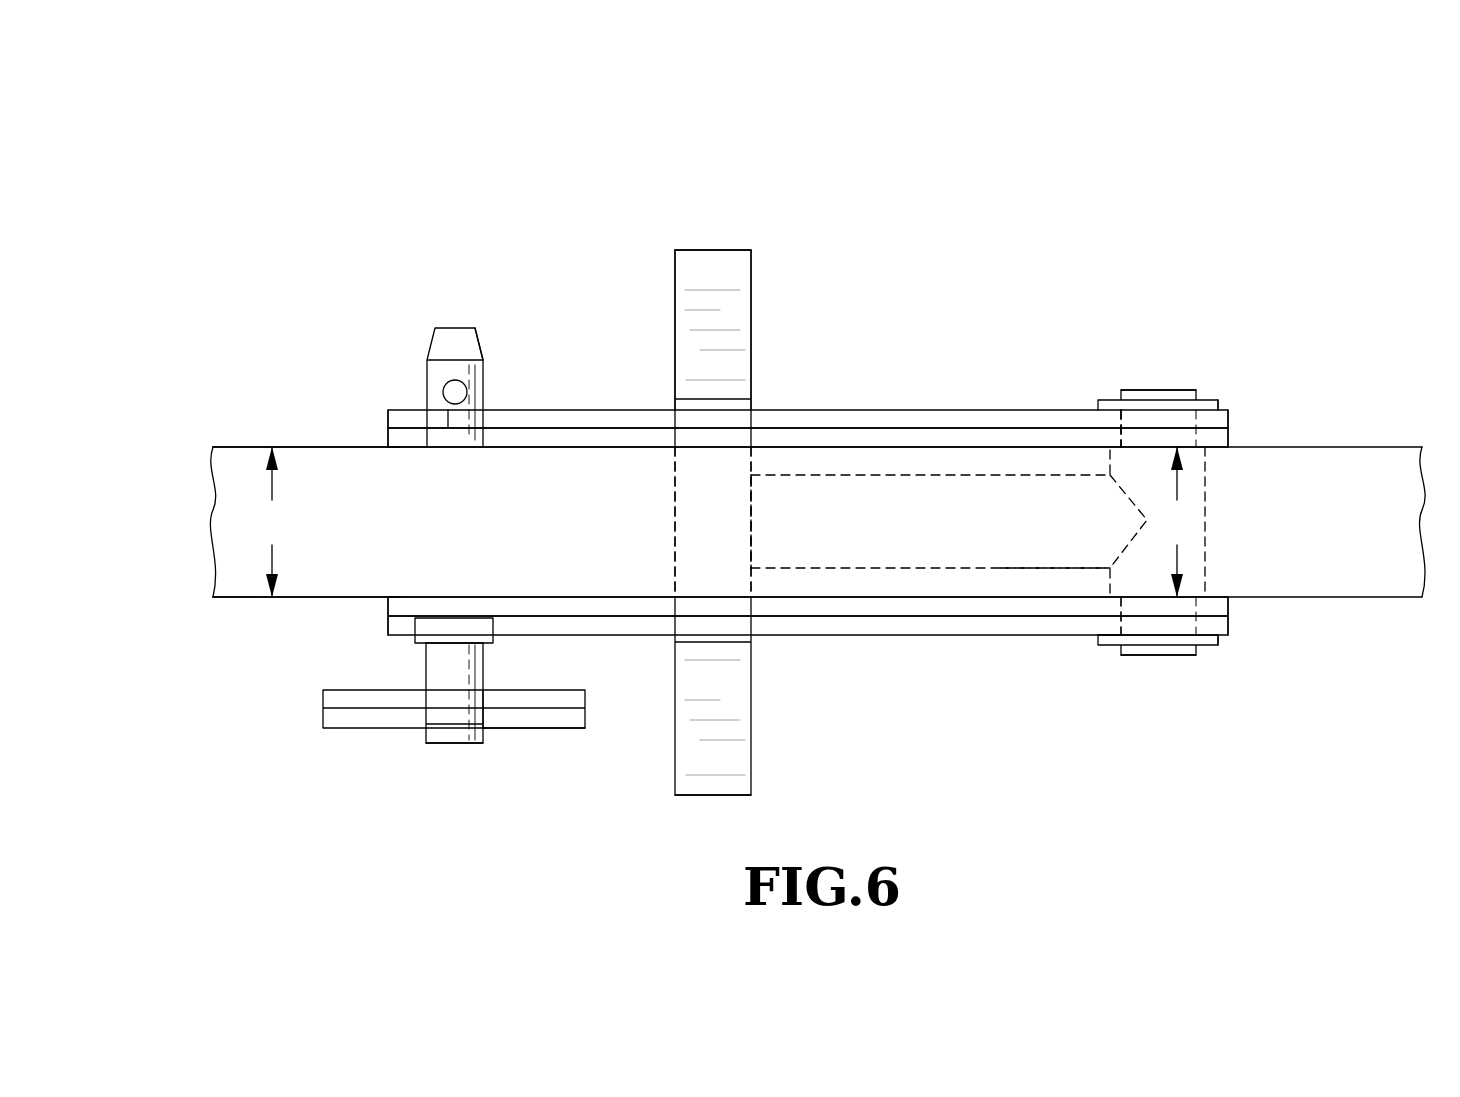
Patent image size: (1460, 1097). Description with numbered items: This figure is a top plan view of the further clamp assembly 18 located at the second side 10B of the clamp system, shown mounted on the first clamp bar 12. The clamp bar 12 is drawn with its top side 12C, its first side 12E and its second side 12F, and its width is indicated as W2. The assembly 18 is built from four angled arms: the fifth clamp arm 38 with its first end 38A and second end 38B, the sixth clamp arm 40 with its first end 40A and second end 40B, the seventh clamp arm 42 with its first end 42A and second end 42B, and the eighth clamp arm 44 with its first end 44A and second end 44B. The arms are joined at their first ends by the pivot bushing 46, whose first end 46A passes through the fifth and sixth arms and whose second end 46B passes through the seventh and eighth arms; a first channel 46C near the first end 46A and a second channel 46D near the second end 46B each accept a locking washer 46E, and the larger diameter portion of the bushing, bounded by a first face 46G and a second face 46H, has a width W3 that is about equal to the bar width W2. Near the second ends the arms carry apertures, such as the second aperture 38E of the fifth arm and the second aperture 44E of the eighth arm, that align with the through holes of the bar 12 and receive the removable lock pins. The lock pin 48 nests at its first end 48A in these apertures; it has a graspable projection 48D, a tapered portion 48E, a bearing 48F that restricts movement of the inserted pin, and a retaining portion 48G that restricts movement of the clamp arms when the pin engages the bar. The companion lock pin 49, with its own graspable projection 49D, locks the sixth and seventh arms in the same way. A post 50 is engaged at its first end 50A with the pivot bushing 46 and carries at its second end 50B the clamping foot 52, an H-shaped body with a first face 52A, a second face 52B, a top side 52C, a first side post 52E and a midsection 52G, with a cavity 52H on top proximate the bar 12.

The second side 10B is at (1418, 190).
The first clamp bar 12 is at (210, 508).
The top side 12C is at (714, 522).
The first side 12E is at (213, 597).
The second side 12F is at (213, 447).
The further clamp assembly 18 is at (1038, 238).
The fifth clamp arm 38 is at (812, 622).
The first end 38A is at (1228, 612).
The second end 38B is at (388, 605).
The second aperture 38E is at (440, 597).
The sixth clamp arm 40 is at (980, 646).
The first end 40A is at (1228, 628).
The second end 40B is at (388, 627).
The seventh clamp arm 42 is at (968, 422).
The first end 42A is at (1228, 442).
The second end 42B is at (388, 440).
The eighth clamp arm 44 is at (846, 403).
The first end 44A is at (1228, 418).
The second end 44B is at (388, 415).
The second aperture 44E is at (450, 420).
The pivot bushing 46 is at (1205, 555).
The first end 46A is at (1172, 665).
The second end 46B is at (1168, 385).
The first channel 46C is at (1130, 638).
The second channel 46D is at (1128, 415).
The locking washer 46E is at (1210, 400).
The first face 46G is at (1125, 638).
The second face 46H is at (1130, 440).
The removable lock pin 48 is at (445, 322).
The first end 48A is at (447, 745).
The graspable projection 48D is at (500, 695).
The tapered portion 48E is at (478, 346).
The bearing 48F is at (450, 392).
The retaining portion 48G is at (453, 635).
The removable lock pin 49 is at (468, 750).
The graspable projection 49D is at (530, 722).
The post 50 is at (1016, 505).
The first end 50A is at (1022, 620).
The second end 50B is at (762, 528).
The clamping foot 52 is at (738, 238).
The first face 52A is at (751, 295).
The second face 52B is at (675, 328).
The top side 52C is at (710, 287).
The first side post 52E is at (703, 808).
The midsection 52G is at (672, 486).
The cavity 52H is at (712, 565).
The width W2 is at (272, 522).
The width W3 is at (1177, 522).